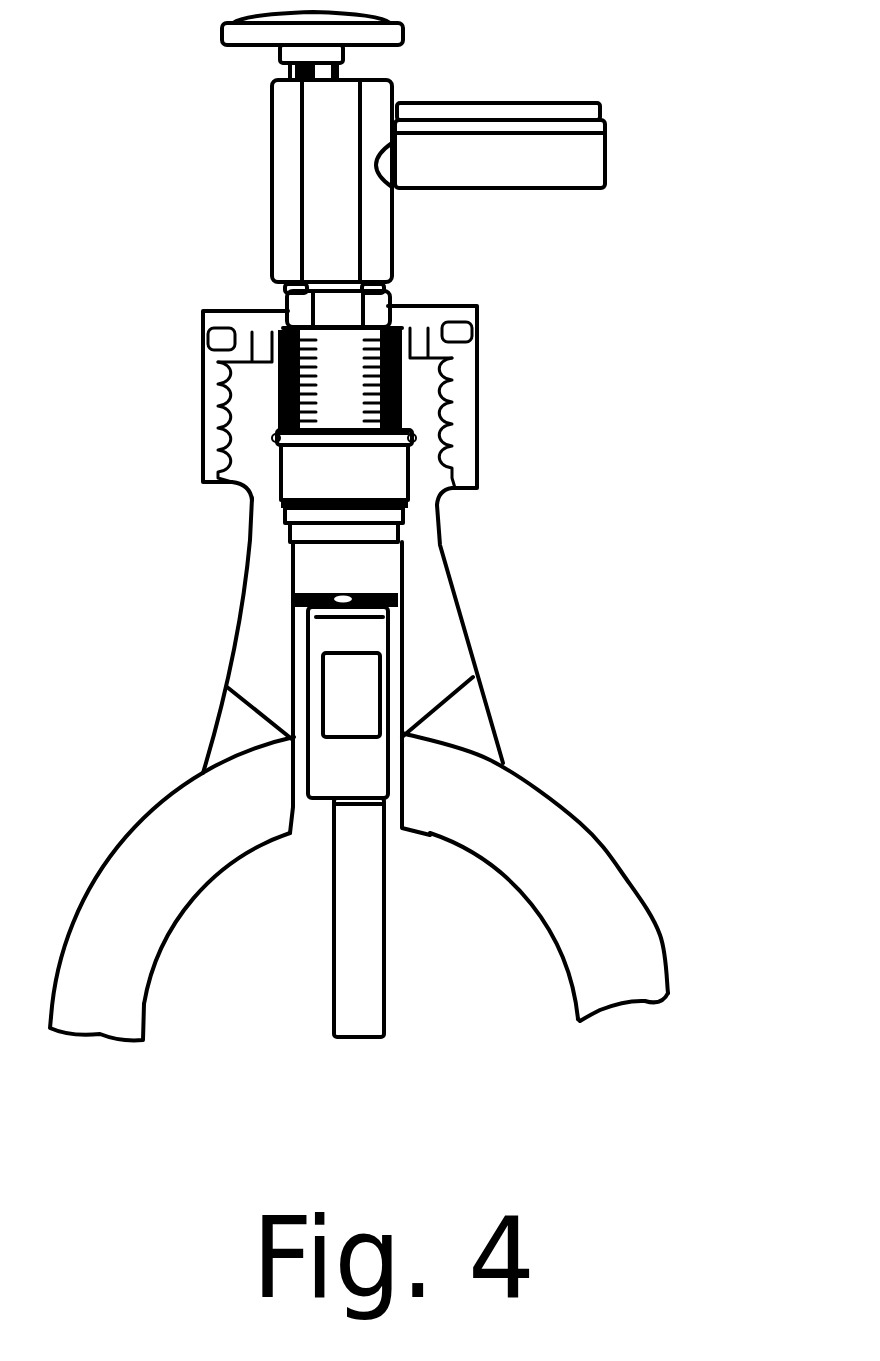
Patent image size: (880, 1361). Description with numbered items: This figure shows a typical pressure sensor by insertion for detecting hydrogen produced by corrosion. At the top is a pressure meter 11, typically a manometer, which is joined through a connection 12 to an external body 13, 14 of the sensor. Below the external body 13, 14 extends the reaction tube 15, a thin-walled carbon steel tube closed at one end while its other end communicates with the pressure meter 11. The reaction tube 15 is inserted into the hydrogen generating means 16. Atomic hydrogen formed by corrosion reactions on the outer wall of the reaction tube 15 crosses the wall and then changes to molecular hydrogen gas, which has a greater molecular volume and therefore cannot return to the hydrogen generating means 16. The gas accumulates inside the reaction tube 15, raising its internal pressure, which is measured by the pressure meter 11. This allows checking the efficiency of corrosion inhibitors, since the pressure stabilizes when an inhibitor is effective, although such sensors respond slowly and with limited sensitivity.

The pressure meter 11 is at (555, 155).
The connection 12 is at (393, 295).
The external body 13 is at (477, 397).
The external body 14 is at (415, 617).
The reaction tube 15 is at (417, 683).
The hydrogen generating means 16 is at (470, 913).